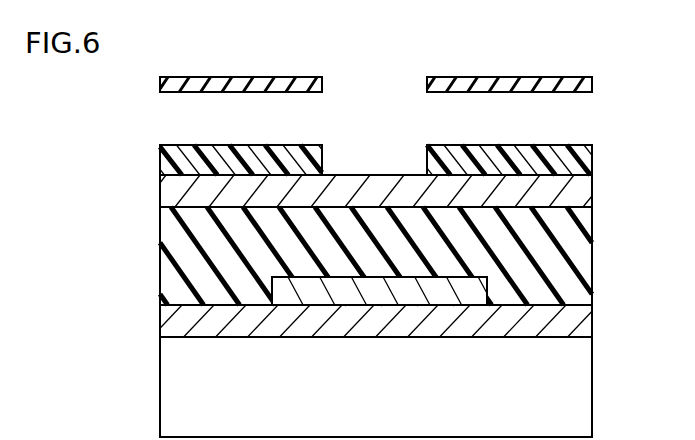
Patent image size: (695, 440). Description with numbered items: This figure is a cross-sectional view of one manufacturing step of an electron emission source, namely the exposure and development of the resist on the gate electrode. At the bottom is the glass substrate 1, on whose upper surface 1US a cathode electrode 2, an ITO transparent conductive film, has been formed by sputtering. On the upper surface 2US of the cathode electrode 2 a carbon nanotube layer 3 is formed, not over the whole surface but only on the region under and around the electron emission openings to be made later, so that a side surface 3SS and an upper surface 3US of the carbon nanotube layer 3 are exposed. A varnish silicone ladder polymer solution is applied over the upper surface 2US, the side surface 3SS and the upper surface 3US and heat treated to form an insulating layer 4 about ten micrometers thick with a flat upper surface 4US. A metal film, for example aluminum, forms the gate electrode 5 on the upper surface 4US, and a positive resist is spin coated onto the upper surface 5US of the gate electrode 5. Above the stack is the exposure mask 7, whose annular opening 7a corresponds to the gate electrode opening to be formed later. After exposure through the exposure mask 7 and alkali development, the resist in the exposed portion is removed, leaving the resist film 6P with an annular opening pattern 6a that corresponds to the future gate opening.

The glass substrate 1 is at (563, 388).
The cathode electrode 2 is at (560, 318).
The carbon nanotube layer 3 is at (450, 290).
The insulating layer 4 is at (210, 240).
The gate electrode 5 is at (553, 192).
The resist film 6P is at (558, 160).
The exposure mask 7 is at (592, 81).
The opening 7a is at (322, 83).
The opening pattern 6a is at (427, 167).
The upper surface 5US is at (207, 175).
The upper surface 4US is at (207, 207).
The side surface 3SS is at (267, 298).
The upper surface 3US is at (412, 272).
The upper surface 2US is at (560, 300).
The upper surface 1US is at (207, 337).